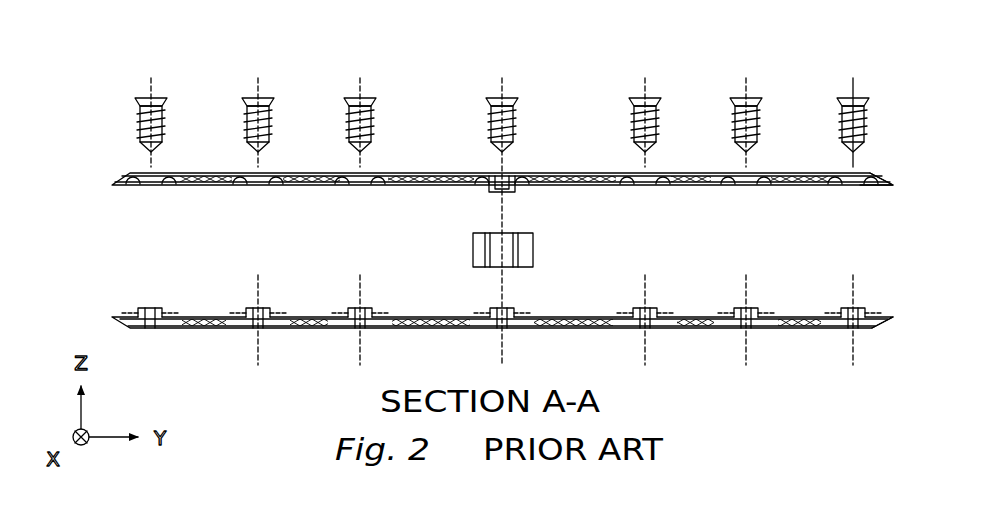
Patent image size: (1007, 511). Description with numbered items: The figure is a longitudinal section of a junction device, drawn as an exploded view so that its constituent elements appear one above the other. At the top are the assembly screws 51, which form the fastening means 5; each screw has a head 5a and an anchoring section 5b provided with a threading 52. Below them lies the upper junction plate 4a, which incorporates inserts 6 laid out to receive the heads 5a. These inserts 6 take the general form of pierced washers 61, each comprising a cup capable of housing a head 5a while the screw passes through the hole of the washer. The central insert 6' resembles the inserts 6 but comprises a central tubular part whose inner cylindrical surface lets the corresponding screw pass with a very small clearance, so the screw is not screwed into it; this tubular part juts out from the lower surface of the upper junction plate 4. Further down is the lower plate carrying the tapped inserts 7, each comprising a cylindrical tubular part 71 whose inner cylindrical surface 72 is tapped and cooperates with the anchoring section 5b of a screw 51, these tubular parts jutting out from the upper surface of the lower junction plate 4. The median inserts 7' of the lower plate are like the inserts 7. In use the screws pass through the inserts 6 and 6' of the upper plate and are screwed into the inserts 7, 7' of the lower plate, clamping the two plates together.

The junction plate 4 is at (481, 324).
The upper junction plate 4a is at (490, 183).
The fastening means 5 is at (525, 95).
The head 5a is at (856, 99).
The anchoring section 5b is at (860, 141).
The assembly screws 51 is at (490, 128).
The threading 52 is at (656, 136).
The inserts 6 is at (502, 200).
The central insert 6' is at (520, 164).
The pierced washers 61 is at (880, 188).
The tapped inserts 7 is at (506, 324).
The median inserts 7' is at (509, 301).
The cylindrical tubular part 71 is at (748, 326).
The inner cylindrical surface 72 is at (858, 330).